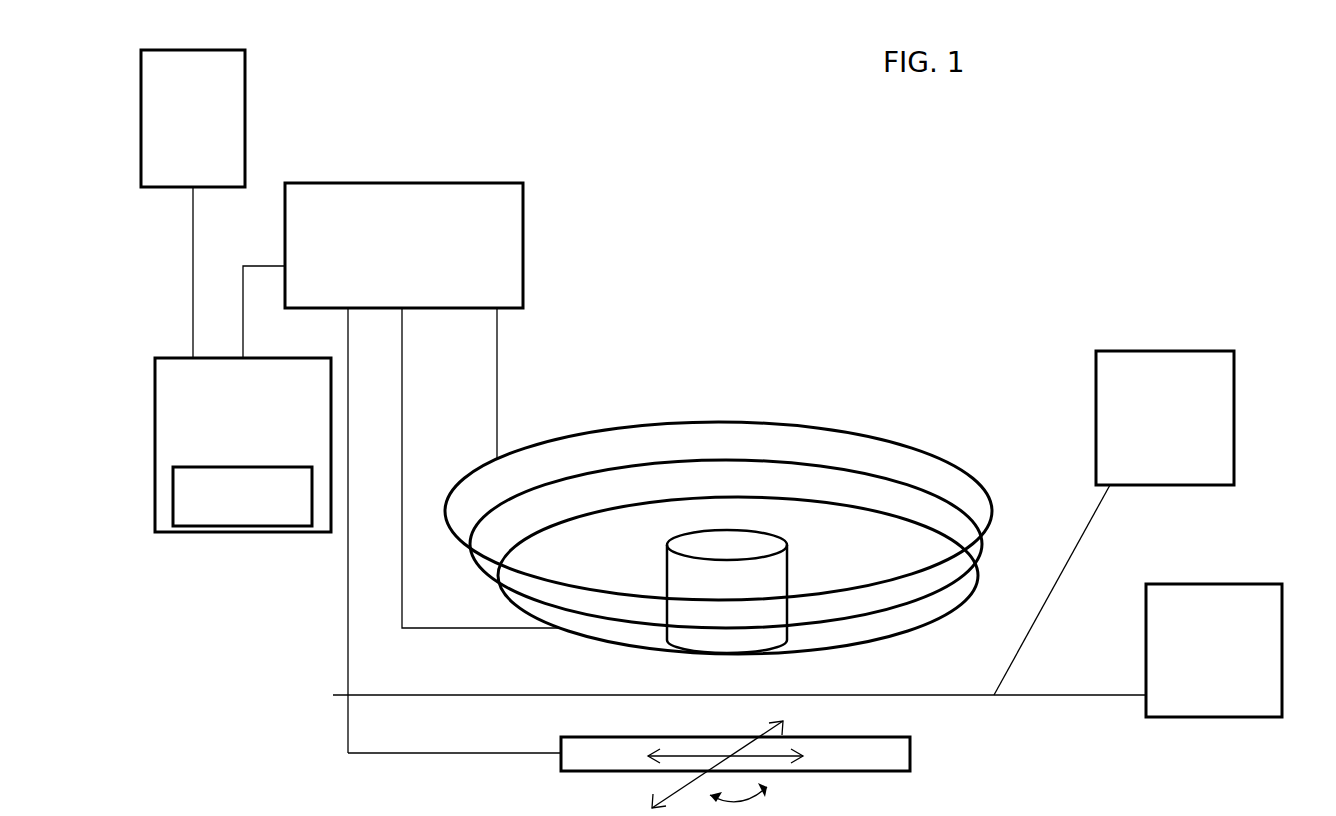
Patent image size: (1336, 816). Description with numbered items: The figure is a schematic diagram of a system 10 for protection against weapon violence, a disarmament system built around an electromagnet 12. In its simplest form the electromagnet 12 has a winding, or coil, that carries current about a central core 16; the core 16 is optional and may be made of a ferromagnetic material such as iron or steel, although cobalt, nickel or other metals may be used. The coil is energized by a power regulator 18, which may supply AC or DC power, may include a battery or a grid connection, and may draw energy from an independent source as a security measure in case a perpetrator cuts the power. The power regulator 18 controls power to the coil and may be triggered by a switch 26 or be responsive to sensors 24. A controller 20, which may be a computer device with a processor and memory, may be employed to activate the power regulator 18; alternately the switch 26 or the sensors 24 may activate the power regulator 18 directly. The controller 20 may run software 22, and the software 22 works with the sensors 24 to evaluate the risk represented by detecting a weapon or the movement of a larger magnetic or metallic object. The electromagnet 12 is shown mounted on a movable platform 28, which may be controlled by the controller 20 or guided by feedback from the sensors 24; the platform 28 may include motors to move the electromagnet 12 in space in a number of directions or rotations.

The system 10 is at (880, 239).
The electromagnet 12 is at (880, 418).
The central core 16 is at (758, 548).
The power regulator 18 is at (488, 202).
The controller 20 is at (257, 406).
The software 22 is at (252, 508).
The sensors 24 is at (1164, 380).
The switch 26 is at (248, 113).
The movable platform 28 is at (892, 756).